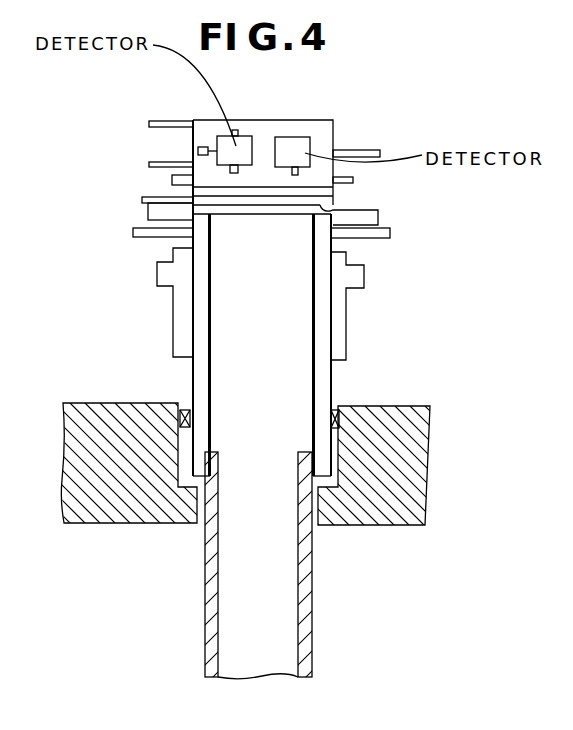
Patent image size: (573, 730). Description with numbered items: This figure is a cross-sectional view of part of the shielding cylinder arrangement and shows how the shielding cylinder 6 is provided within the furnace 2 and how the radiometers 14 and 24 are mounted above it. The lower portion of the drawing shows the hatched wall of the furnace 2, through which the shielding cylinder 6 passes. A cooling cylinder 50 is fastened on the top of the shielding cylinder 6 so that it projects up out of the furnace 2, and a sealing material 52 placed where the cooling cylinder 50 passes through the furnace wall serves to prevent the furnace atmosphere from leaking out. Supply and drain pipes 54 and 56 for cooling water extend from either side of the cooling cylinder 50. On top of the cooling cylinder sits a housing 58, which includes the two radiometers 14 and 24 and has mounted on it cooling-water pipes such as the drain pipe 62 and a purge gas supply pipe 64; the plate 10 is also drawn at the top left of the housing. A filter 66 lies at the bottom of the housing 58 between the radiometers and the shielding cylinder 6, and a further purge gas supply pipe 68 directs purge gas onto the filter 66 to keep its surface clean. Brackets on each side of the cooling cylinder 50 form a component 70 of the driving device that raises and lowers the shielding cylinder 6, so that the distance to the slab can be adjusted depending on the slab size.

The furnace 2 is at (423, 407).
The shielding cylinder 6 is at (306, 594).
The plate 10 is at (173, 121).
The radiometer 14 is at (245, 140).
The radiometer 24 is at (298, 137).
The cooling cylinder 50 is at (332, 377).
The sealing material 52 is at (334, 410).
The supply pipe for cooling water 54 is at (378, 240).
The drain pipe for cooling water 56 is at (143, 238).
The housing 58 is at (333, 119).
The drain pipe 62 is at (165, 162).
The purge gas supply pipe 64 is at (358, 150).
The filter 66 is at (338, 209).
The purge gas supply pipe 68 is at (160, 198).
The component of the driving device 70 is at (346, 326).